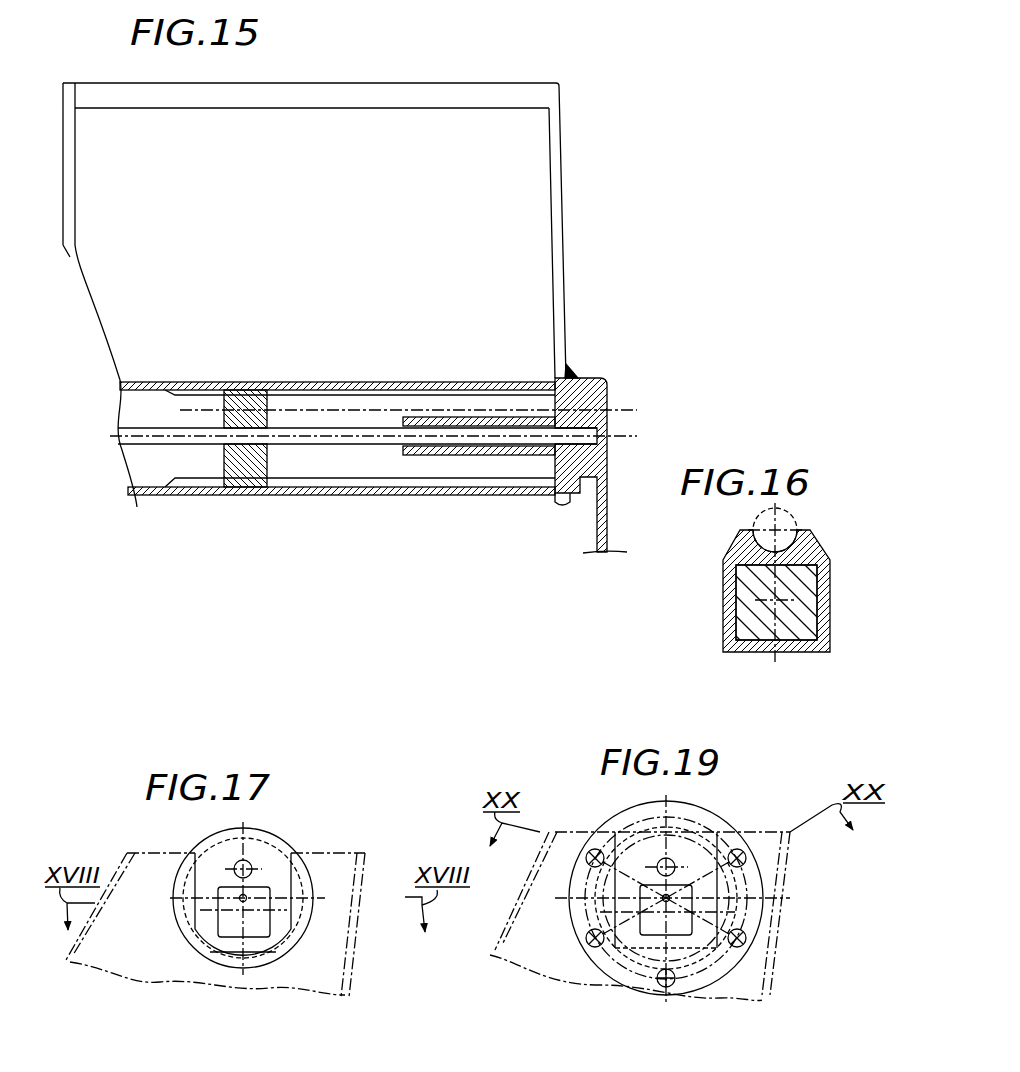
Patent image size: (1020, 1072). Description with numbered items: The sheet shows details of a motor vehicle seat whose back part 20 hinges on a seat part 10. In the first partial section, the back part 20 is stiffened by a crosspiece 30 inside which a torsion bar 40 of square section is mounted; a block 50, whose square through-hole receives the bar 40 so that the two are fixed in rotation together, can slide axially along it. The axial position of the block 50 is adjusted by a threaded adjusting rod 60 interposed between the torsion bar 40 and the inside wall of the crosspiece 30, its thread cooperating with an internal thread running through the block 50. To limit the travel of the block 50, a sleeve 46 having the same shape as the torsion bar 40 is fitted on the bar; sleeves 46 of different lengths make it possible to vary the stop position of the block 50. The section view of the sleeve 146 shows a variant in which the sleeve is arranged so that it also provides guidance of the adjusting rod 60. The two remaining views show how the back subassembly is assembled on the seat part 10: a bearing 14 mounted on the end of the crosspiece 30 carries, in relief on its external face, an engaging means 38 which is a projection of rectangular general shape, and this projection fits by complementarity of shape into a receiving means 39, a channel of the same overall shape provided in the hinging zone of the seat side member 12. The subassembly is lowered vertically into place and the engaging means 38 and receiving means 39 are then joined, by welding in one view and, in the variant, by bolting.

In FIG. 15, the seat part 10 is at (595, 534).
In FIG. 17, the seat side member 12 is at (368, 926).
In FIG. 19, the seat side member 12 is at (798, 905).
In FIG. 17, the bearing 14 is at (283, 835).
In FIG. 19, the bearing 14 is at (725, 821).
In FIG. 15, the back part 20 is at (409, 80).
In FIG. 15, the crosspiece 30 is at (299, 378).
In FIG. 17, the engaging means 38 is at (203, 922).
In FIG. 19, the engaging means 38 is at (603, 910).
In FIG. 17, the receiving means 39 is at (198, 872).
In FIG. 19, the receiving means 39 is at (620, 860).
In FIG. 15, the torsion bar 40 is at (342, 452).
In FIG. 16, the torsion bar 40 is at (815, 614).
In FIG. 15, the sleeve 46 is at (483, 416).
In FIG. 15, the block 50 is at (251, 475).
In FIG. 15, the adjusting rod 60 is at (401, 408).
In FIG. 16, the adjusting rod 60 is at (792, 516).
In FIG. 16, the sleeve 146 is at (726, 621).